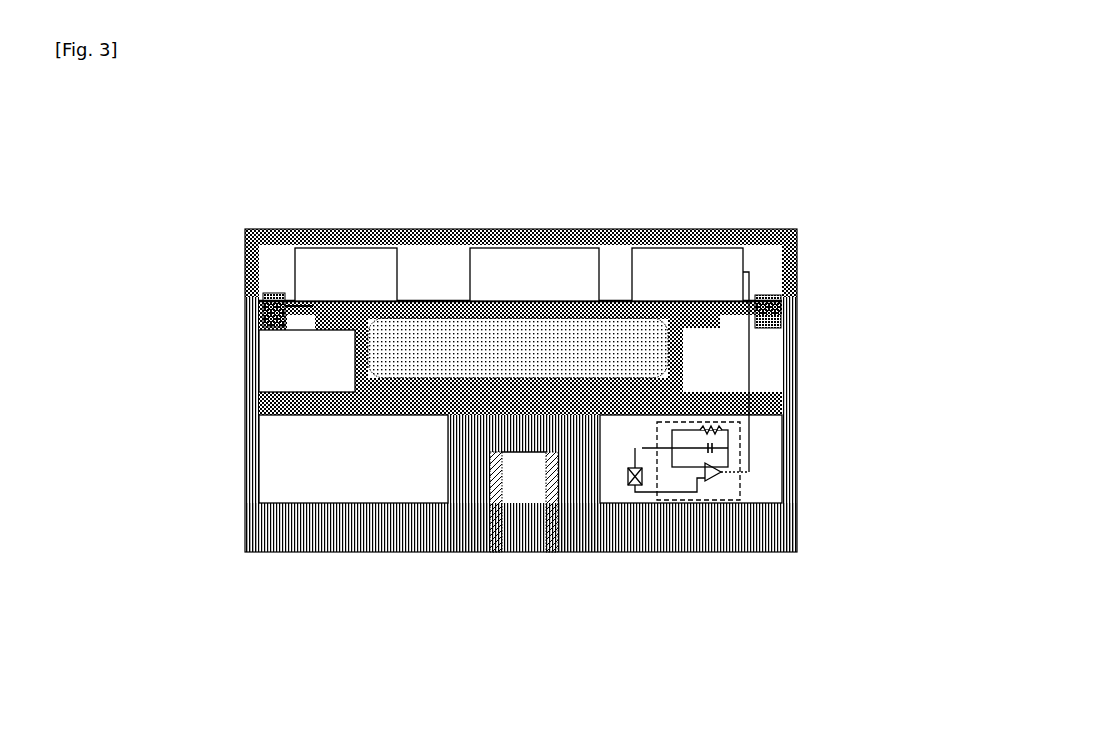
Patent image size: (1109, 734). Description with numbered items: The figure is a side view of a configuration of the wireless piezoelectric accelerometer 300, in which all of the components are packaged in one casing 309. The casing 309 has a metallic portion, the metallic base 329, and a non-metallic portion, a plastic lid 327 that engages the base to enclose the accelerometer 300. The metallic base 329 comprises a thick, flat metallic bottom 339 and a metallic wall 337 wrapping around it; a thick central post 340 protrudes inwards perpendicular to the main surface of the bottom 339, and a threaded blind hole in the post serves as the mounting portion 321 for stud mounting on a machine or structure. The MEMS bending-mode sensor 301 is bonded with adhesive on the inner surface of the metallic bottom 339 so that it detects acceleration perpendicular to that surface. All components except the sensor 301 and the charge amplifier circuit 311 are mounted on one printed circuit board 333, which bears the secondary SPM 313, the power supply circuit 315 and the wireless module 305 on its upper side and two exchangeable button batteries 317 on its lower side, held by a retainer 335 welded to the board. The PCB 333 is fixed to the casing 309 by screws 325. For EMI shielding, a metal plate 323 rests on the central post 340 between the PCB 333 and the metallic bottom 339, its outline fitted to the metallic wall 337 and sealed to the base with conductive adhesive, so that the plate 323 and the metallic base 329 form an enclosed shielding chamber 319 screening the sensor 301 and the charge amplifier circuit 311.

The wireless piezoelectric accelerometer 300 is at (523, 702).
The MEMS bending-mode sensor 301 is at (625, 485).
The wireless module 305 is at (357, 248).
The casing 309 is at (797, 402).
The charge amplifier circuit 311 is at (738, 497).
The secondary SPM 313 is at (672, 248).
The power supply circuit 315 is at (547, 248).
The batteries 317 is at (518, 348).
The shielding chamber 319 is at (770, 472).
The mounting portion 321 is at (530, 507).
The metal plate 323 is at (267, 405).
The screws 325 is at (765, 293).
The plastic lid 327 is at (275, 227).
The metallic base 329 is at (798, 472).
The printed circuit board 333 is at (263, 297).
The retainer 335 is at (360, 353).
The metallic wall 337 is at (797, 450).
The metallic bottom 339 is at (352, 518).
The central post 340 is at (473, 447).